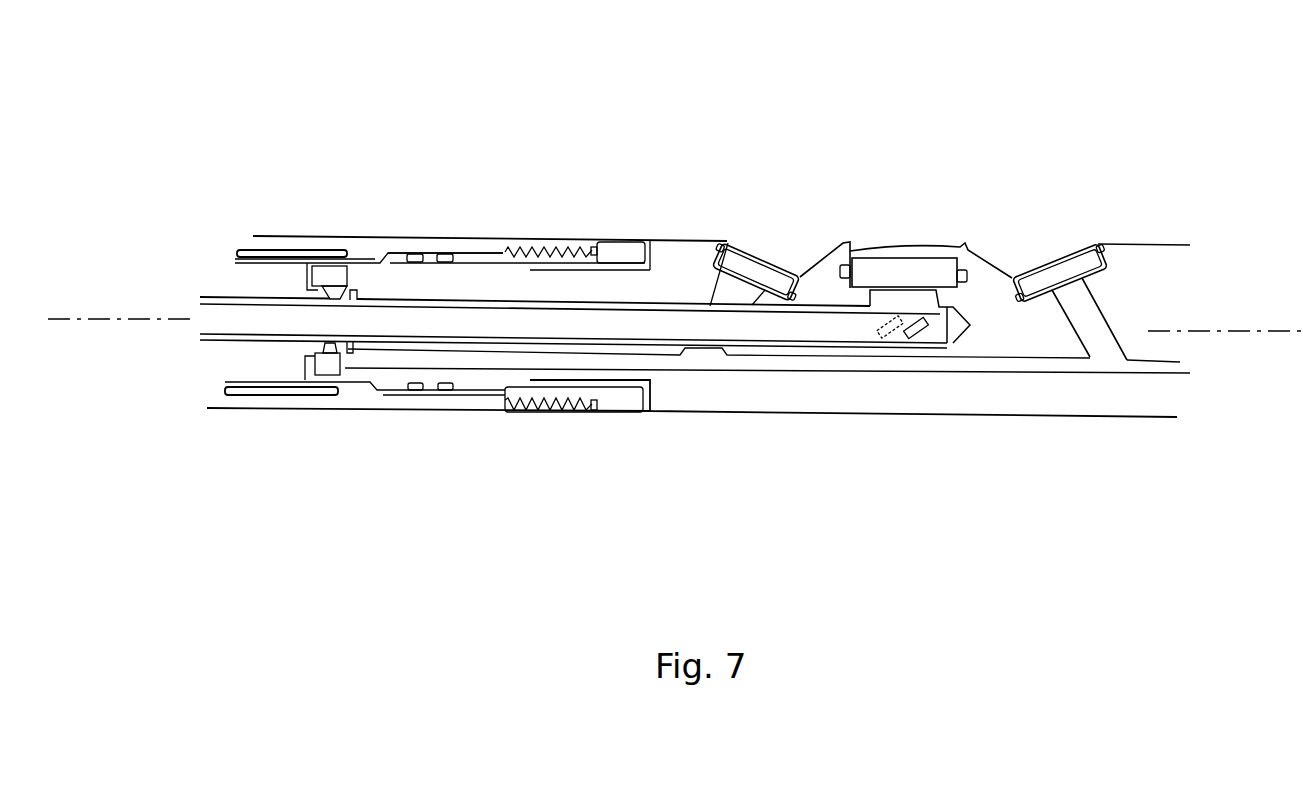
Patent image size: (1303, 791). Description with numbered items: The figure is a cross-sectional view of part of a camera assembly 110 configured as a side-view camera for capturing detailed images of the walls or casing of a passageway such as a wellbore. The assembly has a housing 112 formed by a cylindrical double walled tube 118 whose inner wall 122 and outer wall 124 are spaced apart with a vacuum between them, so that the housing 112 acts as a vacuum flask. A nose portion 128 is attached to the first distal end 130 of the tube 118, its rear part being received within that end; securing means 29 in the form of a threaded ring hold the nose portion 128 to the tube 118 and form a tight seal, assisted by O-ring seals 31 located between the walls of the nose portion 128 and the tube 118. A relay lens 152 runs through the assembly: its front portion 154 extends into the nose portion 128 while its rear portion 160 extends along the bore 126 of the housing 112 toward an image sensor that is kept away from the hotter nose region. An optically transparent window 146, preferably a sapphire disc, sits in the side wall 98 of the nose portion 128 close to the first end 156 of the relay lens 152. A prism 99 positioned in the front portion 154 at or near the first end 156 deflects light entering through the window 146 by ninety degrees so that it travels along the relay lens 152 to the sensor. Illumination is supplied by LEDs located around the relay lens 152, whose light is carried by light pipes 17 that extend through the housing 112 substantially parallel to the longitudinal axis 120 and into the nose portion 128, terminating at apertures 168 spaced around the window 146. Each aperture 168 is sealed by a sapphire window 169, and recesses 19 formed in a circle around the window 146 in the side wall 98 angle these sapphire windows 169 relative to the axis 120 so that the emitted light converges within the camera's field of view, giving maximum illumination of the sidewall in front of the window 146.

The camera assembly 110 is at (475, 128).
The bore 126 is at (278, 300).
The rear portion 160 is at (258, 318).
The cylindrical double walled tube 118 is at (327, 240).
The first distal end 130 is at (470, 243).
The securing means 29 is at (618, 248).
The relay lens 152 is at (640, 323).
The light pipes 17 is at (725, 297).
The apertures 168 is at (733, 248).
The sapphire window 169 is at (762, 275).
The recesses 19 is at (807, 255).
The window 146 is at (912, 268).
The side wall 98 is at (985, 250).
The longitudinal axis 120 is at (1233, 330).
The outer wall 124 is at (238, 402).
The inner wall 122 is at (283, 380).
The housing 112 is at (357, 408).
The O-ring seals 31 is at (445, 395).
The front portion 154 is at (748, 333).
The nose portion 128 is at (850, 415).
The first end 156 is at (945, 347).
The prism 99 is at (920, 332).